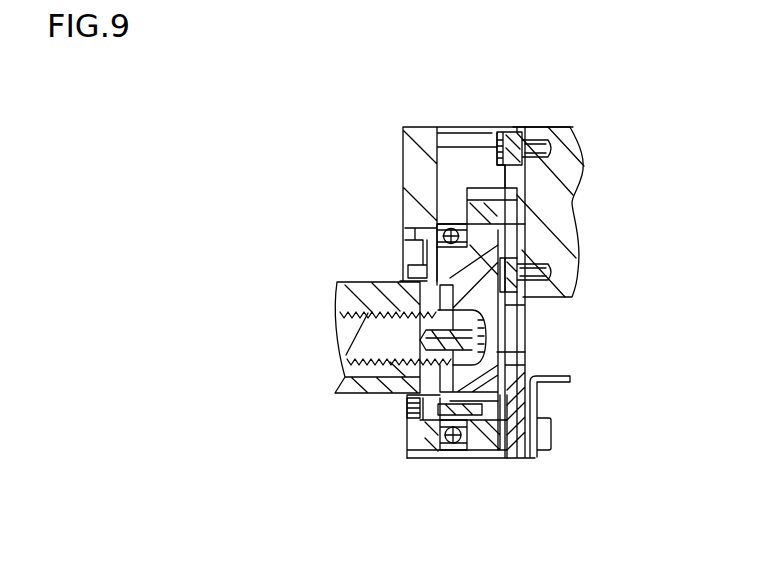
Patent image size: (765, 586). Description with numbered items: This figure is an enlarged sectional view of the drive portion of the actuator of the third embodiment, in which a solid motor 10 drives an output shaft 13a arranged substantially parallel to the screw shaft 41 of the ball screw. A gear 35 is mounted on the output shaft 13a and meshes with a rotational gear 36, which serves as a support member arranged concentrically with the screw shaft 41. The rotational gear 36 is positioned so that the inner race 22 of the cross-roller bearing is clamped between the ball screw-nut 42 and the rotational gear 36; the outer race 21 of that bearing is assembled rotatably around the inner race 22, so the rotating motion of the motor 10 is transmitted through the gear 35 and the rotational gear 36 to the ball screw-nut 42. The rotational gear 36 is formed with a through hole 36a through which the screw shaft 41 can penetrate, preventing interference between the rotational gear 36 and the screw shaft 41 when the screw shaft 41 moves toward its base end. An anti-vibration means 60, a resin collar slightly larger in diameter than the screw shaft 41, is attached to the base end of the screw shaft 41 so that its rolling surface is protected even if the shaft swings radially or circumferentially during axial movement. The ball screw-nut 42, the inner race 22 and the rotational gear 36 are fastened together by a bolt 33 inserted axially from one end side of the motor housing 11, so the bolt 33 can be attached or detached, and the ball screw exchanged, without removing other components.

The motor 10 is at (565, 228).
The motor housing 11 is at (517, 450).
The output shaft 13a is at (448, 226).
The outer race 21 is at (442, 455).
The inner race 22 is at (414, 457).
The bolt 33 is at (408, 400).
The gear 35 is at (483, 187).
The rotational gear 36 is at (525, 315).
The through hole 36a is at (525, 352).
The screw shaft 41 is at (368, 335).
The ball screw-nut 42 is at (372, 283).
The anti-vibration means 60 is at (487, 457).